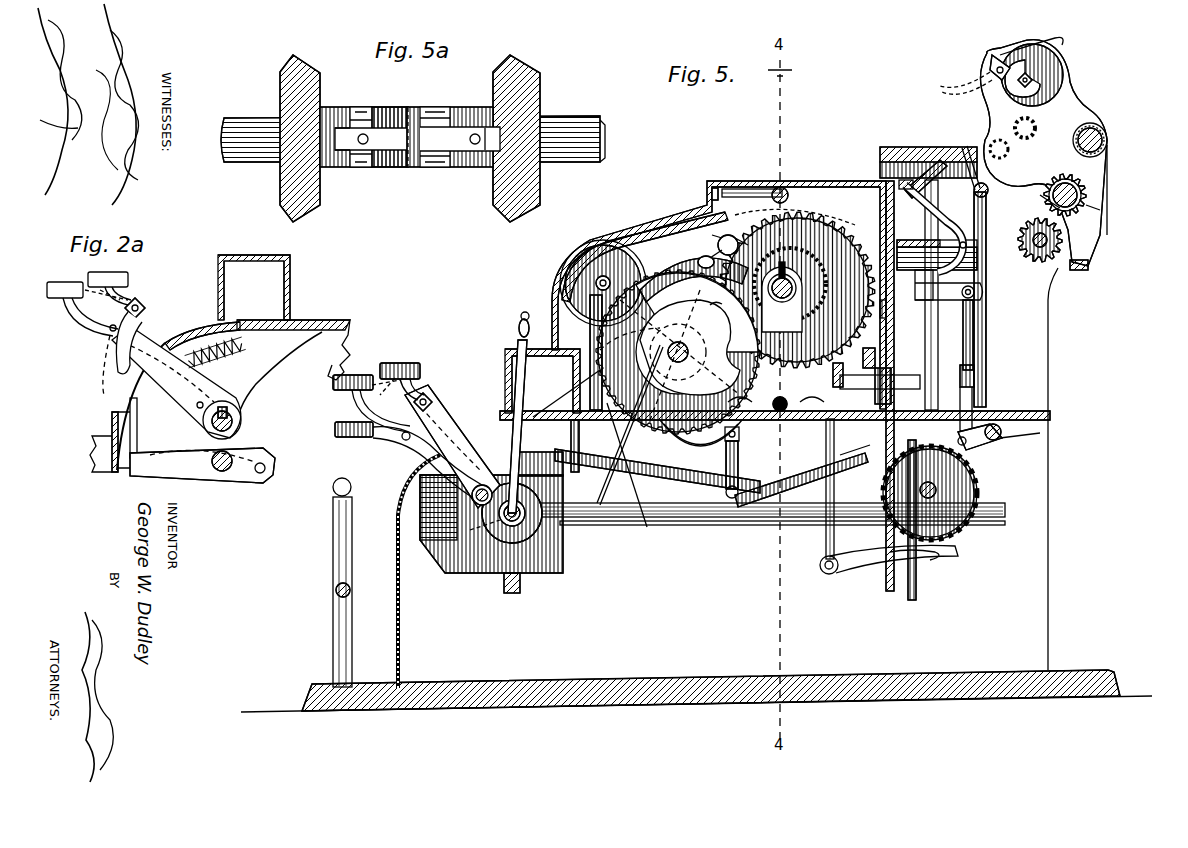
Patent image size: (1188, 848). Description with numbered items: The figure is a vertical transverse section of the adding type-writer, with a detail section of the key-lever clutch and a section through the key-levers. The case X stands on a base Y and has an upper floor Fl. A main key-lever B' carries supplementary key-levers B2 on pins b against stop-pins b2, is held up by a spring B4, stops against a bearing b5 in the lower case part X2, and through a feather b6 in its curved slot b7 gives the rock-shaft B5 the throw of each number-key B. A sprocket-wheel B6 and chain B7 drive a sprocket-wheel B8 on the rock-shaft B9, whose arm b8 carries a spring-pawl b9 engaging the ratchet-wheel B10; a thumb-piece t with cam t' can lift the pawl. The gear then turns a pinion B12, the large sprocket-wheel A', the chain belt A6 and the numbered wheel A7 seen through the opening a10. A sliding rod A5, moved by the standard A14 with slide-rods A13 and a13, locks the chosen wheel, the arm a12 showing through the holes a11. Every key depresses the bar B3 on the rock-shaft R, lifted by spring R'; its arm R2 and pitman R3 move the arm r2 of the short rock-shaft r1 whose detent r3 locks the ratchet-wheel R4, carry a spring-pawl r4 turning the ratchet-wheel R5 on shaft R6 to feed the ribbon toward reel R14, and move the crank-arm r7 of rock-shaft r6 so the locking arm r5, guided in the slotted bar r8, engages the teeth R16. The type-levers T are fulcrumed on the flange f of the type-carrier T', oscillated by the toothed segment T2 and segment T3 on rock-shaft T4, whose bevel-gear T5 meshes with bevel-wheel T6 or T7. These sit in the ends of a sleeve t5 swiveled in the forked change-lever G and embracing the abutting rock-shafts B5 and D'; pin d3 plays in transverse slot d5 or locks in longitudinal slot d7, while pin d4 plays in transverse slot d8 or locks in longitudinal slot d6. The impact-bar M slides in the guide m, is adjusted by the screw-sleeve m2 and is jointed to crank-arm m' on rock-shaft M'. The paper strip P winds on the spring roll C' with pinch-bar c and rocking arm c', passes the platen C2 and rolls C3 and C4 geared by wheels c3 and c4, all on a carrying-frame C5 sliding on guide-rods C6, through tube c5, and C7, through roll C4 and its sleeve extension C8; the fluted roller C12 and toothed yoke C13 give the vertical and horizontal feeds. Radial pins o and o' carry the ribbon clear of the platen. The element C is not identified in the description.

In FIG. 5A, the rock-shaft D' is at (410, 127).
In FIG. 5A, the rock-shaft B5 is at (585, 122).
In FIG. 2A, the rock-shaft B5 is at (236, 426).
In FIG. 5, the rock-shaft B5 is at (540, 580).
In FIG. 5A, the bevel gear-wheel T7 is at (308, 134).
In FIG. 5A, the bevel gear-wheel T6 is at (526, 133).
In FIG. 5, the bevel gear-wheel T6 is at (495, 540).
In FIG. 5A, the longitudinal slot d7 is at (345, 110).
In FIG. 5A, the transverse slot d5 is at (385, 108).
In FIG. 5A, the pin d3 is at (365, 145).
In FIG. 5A, the sleeve t5 is at (350, 165).
In FIG. 5, the sleeve t5 is at (470, 545).
In FIG. 5A, the transverse slot d8 is at (458, 108).
In FIG. 5A, the pin d4 is at (473, 146).
In FIG. 5A, the longitudinal slot d6 is at (486, 150).
In FIG. 2A, the outer case X is at (258, 252).
In FIG. 5, the outer case X is at (506, 378).
In FIG. 2A, the spring B4 is at (240, 358).
In FIG. 2A, the main key-lever B' is at (217, 396).
In FIG. 5, the main key-lever B' is at (436, 446).
In FIG. 2A, the feather b6 is at (228, 412).
In FIG. 2A, the curved slot b7 is at (200, 408).
In FIG. 2A, the depression-bar B3 is at (137, 452).
In FIG. 5, the depression-bar B3 is at (408, 548).
In FIG. 2A, the spring R' is at (202, 471).
In FIG. 2A, the rock-shaft R is at (218, 477).
In FIG. 2A, the number-keys B is at (89, 304).
In FIG. 5, the number-keys B is at (378, 386).
In FIG. 2A, the supplementary key-lever B2 is at (120, 300).
In FIG. 5, the supplementary key-lever B2 is at (414, 392).
In FIG. 2A, the lateral pin b is at (145, 308).
In FIG. 5, the lateral pin b is at (433, 401).
In FIG. 2A, the stop-pin b2 is at (110, 332).
In FIG. 5, the stop-pin b2 is at (404, 438).
In FIG. 2A, the lower part of the case X2 is at (108, 393).
In FIG. 5, the lower part of the case X2 is at (395, 548).
In FIG. 5, the base Y is at (704, 680).
In FIG. 5, the opening a10 is at (562, 262).
In FIG. 5, the chain belt A6 is at (652, 238).
In FIG. 5, the numbered wheel A7 is at (596, 240).
In FIG. 5, the ratchet-wheel B10 is at (590, 350).
In FIG. 5, the rock-shaft B9 is at (692, 352).
In FIG. 5, the sprocket-wheel B8 is at (665, 352).
In FIG. 5, the ratchet-wheel R4 is at (636, 332).
In FIG. 5, the sprocket-wheel A' is at (799, 289).
In FIG. 5, the sliding rod A5 is at (778, 298).
In FIG. 5, the vertical standard A14 is at (788, 294).
In FIG. 5, the spring-pawl b9 is at (690, 305).
In FIG. 5, the cam t' is at (791, 310).
In FIG. 5, the pinion B12 is at (825, 240).
In FIG. 5, the type-carrier T' is at (873, 292).
In FIG. 5, the swinging arm b8 is at (680, 240).
In FIG. 5, the thumb-piece t is at (853, 305).
In FIG. 5, the arm a12 is at (740, 190).
In FIG. 5, the holes a11 is at (712, 192).
In FIG. 5, the slide-rod a13 is at (784, 190).
In FIG. 5, the slide-rod A13 is at (782, 398).
In FIG. 5, the ribbon spool R14 is at (884, 170).
In FIG. 5, the toothed segment T2 is at (893, 345).
In FIG. 5, the type-lever T is at (937, 295).
In FIG. 5, the paper strip P is at (933, 150).
In FIG. 5, the radial pin o is at (966, 166).
In FIG. 5, the flange f is at (968, 260).
In FIG. 5, the radial pin o' is at (993, 299).
In FIG. 5, the trunnioned guide m is at (967, 294).
In FIG. 5, the impact-bar M is at (968, 320).
In FIG. 5, the screw-sleeve m2 is at (976, 366).
In FIG. 5, the crank-arm m' is at (980, 445).
In FIG. 5, the rock-shaft M' is at (1032, 434).
In FIG. 5, the ratchet-wheel R5 is at (970, 518).
In FIG. 5, the horizontal shaft R6 is at (938, 490).
In FIG. 5, the curved row of teeth R16 is at (918, 575).
In FIG. 5, the detent-guide r8 is at (938, 550).
In FIG. 5, the arm R2 is at (582, 449).
In FIG. 5, the pitman R3 is at (668, 476).
In FIG. 5, the spring-pawl r4 is at (855, 457).
In FIG. 5, the toothed segment T3 is at (862, 462).
In FIG. 5, the rock-shaft T4 is at (775, 518).
In FIG. 5, the crank-arm r7 is at (826, 536).
In FIG. 5, the rock-shaft r6 is at (822, 572).
In FIG. 5, the locking arm r5 is at (882, 562).
In FIG. 5, the detent arm r3 is at (694, 457).
In FIG. 5, the short rock-shaft r1 is at (742, 436).
In FIG. 5, the arm r2 is at (738, 466).
In FIG. 5, the chain B7 is at (614, 470).
In FIG. 5, the upper floor Fl is at (647, 527).
In FIG. 5, the sprocket-wheel B6 is at (565, 548).
In FIG. 5, the bevel-gear T5 is at (560, 552).
In FIG. 5, the change-lever G is at (518, 322).
In FIG. 5, the slot bearing b5 is at (412, 480).
In FIG. 5, the frame C is at (1043, 153).
In FIG. 5, the hollow spring roll C' is at (1045, 75).
In FIG. 5, the pinch-bar c is at (986, 58).
In FIG. 5, the rocking arm c' is at (1039, 40).
In FIG. 5, the platen C2 is at (990, 88).
In FIG. 5, the rubber-faced roll C3 is at (1035, 130).
In FIG. 5, the gear-wheel c3 is at (1010, 148).
In FIG. 5, the carrying-frame C5 is at (1063, 151).
In FIG. 5, the tube c5 is at (1098, 128).
In FIG. 5, the guide-rod C6 is at (1108, 146).
In FIG. 5, the rubber-faced roll C4 is at (1086, 186).
In FIG. 5, the gear-wheel c4 is at (1082, 196).
In FIG. 5, the guide-rod C7 is at (1100, 210).
In FIG. 5, the sleeve extension C8 is at (1045, 200).
In FIG. 5, the fluted roller C12 is at (1040, 262).
In FIG. 5, the toothed yoke C13 is at (1088, 265).